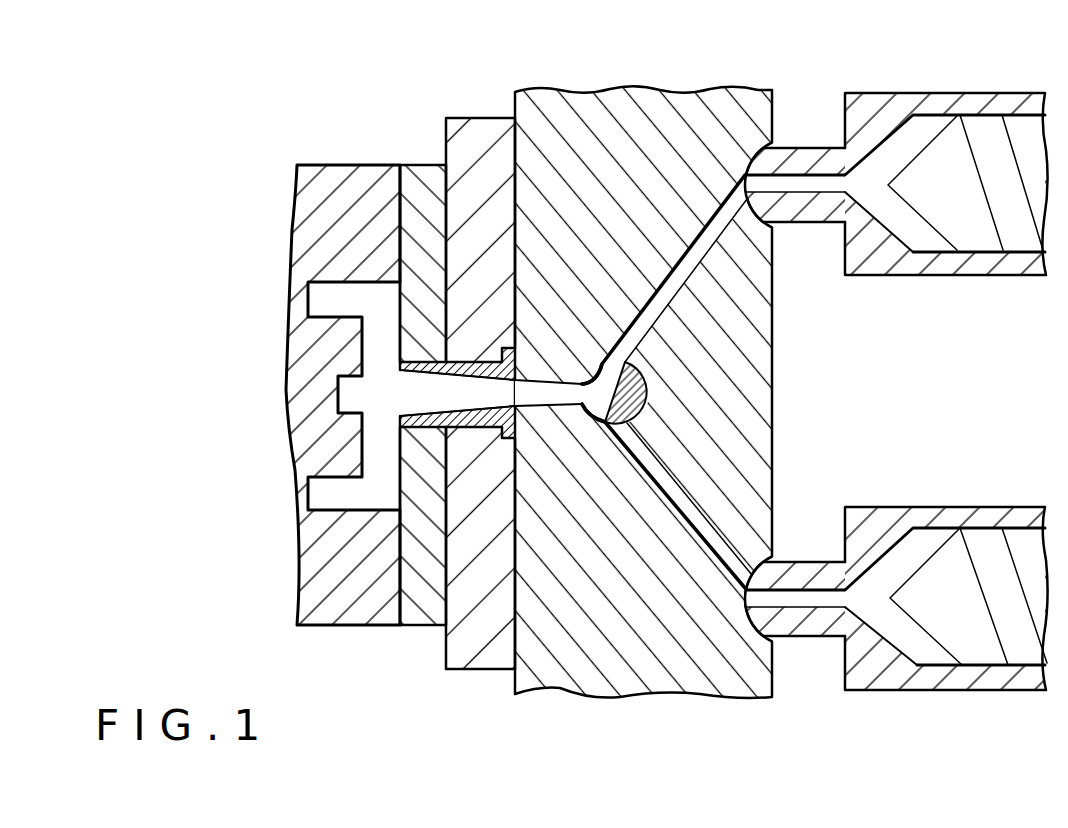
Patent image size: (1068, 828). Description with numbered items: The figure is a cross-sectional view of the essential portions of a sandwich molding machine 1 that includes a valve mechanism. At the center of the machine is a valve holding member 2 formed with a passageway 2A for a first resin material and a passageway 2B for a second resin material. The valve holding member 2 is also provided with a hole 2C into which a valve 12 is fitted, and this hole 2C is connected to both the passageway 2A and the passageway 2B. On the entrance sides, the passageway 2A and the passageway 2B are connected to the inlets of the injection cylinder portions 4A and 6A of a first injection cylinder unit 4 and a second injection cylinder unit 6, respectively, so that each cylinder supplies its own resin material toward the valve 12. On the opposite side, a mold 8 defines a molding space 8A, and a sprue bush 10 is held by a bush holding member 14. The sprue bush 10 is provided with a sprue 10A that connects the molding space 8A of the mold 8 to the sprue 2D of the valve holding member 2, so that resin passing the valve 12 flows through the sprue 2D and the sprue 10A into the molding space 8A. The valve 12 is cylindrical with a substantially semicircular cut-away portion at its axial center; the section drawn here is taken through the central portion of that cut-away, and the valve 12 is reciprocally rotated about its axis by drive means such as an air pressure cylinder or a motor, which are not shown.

The molding machine 1 is at (713, 83).
The valve holding member 2 is at (615, 100).
The passageway for a first resin material 2A is at (697, 250).
The passageway for a second resin material 2B is at (672, 507).
The hole 2C is at (597, 382).
The sprue of the valve holding member 2D is at (553, 393).
The first injection cylinder unit 4 is at (940, 100).
The injection cylinder portion 4A is at (805, 148).
The second injection cylinder unit 6 is at (957, 522).
The injection cylinder portion 6A is at (812, 618).
The mold 8 is at (348, 607).
The molding space 8A is at (404, 405).
The sprue bush 10 is at (468, 430).
The sprue 10A is at (489, 406).
The valve 12 is at (635, 398).
The bush holding member 14 is at (482, 645).